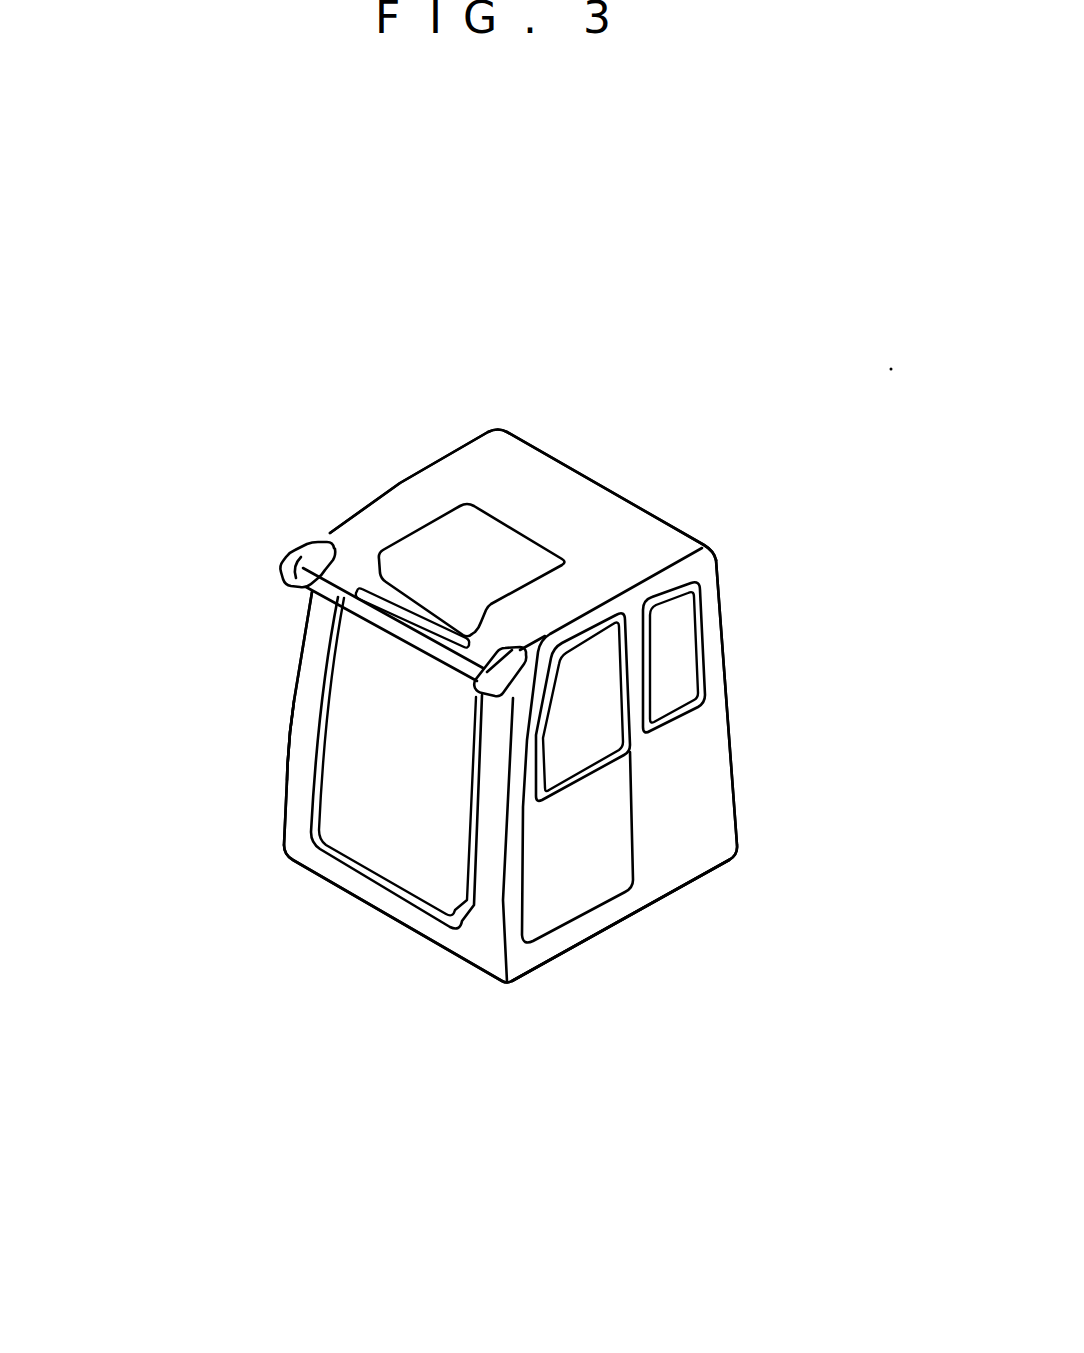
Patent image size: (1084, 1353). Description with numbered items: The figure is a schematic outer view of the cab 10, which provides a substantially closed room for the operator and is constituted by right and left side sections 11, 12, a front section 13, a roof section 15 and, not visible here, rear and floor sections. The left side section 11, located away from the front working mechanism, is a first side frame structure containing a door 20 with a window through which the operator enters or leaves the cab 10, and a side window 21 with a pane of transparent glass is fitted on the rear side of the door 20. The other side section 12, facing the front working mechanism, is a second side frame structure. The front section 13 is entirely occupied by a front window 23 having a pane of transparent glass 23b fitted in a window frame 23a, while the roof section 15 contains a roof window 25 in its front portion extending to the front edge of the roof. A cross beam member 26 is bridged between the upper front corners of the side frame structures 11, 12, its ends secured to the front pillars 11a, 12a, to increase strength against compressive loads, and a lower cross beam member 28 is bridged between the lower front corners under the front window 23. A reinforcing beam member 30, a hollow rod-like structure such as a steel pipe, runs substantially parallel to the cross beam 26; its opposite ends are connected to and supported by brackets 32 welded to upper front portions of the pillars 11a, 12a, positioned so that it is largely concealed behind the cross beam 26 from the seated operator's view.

The cab 10 is at (538, 383).
The left side section 11 is at (717, 880).
The front pillar 11a is at (513, 917).
The side section 12 is at (287, 767).
The front pillar 12a is at (307, 697).
The front section 13 is at (335, 893).
The roof section 15 is at (597, 492).
The door 20 is at (588, 880).
The side window 21 is at (678, 632).
The front window 23 is at (308, 843).
The window frame 23a is at (433, 920).
The pane of transparent glass 23b is at (416, 830).
The roof window 25 is at (480, 543).
The cross beam member 26 is at (398, 600).
The cross beam member 28 is at (470, 950).
The reinforcing beam member 30 is at (330, 588).
The brackets 32 is at (308, 548).